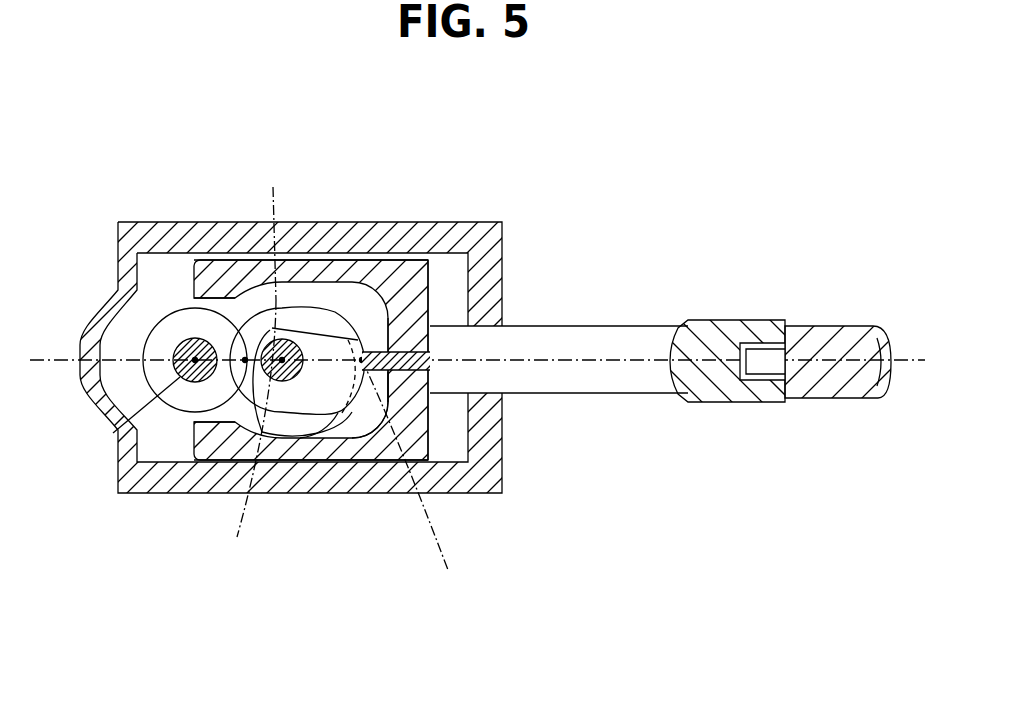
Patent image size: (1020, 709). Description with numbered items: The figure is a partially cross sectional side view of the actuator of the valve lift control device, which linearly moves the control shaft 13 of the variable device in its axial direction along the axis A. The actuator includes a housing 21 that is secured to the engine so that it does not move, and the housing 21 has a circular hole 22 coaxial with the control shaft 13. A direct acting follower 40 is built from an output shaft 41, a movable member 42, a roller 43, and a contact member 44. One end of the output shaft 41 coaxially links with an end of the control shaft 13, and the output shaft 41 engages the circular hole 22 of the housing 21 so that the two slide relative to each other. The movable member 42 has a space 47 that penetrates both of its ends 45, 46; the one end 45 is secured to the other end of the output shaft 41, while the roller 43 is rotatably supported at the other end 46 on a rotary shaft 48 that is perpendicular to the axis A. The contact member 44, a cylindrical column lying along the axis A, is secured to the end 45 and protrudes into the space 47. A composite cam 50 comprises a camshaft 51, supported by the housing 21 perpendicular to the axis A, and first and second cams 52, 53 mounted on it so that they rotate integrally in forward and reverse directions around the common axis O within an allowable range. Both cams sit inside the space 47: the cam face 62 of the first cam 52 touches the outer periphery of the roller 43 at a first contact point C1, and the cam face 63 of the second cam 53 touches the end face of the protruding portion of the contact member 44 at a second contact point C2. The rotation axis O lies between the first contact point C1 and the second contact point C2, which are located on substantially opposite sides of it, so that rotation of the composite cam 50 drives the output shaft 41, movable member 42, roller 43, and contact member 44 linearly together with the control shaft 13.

The control shaft 13 is at (868, 348).
The housing 21 is at (150, 497).
The circular hole 22 is at (500, 390).
The direct acting follower 40 is at (440, 265).
The output shaft 41 is at (548, 337).
The movable member 42 is at (343, 290).
The roller 43 is at (188, 318).
The contact member 44 is at (408, 258).
The one end of the movable member 45 is at (420, 403).
The other end of the movable member 46 is at (170, 452).
The space 47 is at (352, 432).
The rotary shaft 48 is at (118, 428).
The composite cam 50 is at (303, 296).
The camshaft 51 is at (302, 440).
The first cam 52 is at (268, 448).
The second cam 53 is at (374, 352).
The cam face 62 is at (268, 338).
The cam face 63 is at (375, 380).
The common axis O is at (272, 226).
The axis A is at (903, 360).
The first contact point C1 is at (245, 432).
The second contact point C2 is at (421, 481).